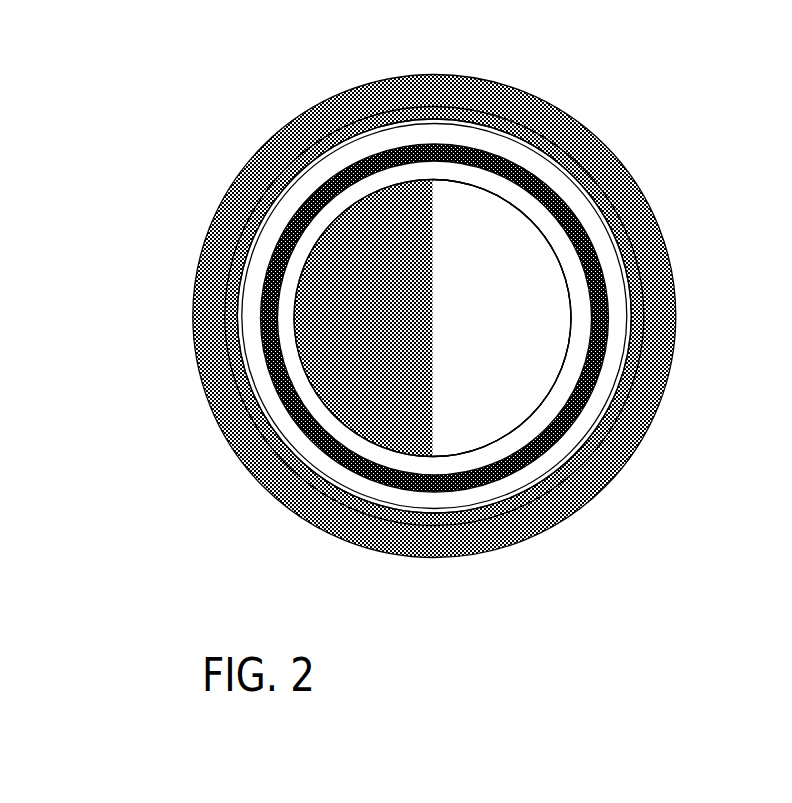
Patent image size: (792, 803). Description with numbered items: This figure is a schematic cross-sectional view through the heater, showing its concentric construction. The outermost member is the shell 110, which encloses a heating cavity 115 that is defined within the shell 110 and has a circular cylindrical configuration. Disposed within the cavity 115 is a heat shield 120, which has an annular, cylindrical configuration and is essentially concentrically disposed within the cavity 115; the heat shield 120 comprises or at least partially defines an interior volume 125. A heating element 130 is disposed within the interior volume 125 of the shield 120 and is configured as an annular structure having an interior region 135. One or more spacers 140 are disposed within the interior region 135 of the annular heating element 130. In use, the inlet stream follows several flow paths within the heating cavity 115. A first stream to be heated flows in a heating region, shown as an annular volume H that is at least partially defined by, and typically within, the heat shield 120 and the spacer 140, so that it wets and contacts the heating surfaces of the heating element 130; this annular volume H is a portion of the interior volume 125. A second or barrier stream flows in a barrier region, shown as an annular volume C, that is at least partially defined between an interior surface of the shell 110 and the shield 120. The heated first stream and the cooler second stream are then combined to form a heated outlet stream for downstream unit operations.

The shell 110 is at (603, 503).
The heating cavity 115 is at (642, 322).
The heat shield 120 is at (236, 317).
The interior volume 125 is at (273, 233).
The heating element 130 is at (435, 152).
The interior region 135 is at (328, 420).
The spacer 140 is at (429, 460).
The annular volume (heating region) H is at (290, 417).
The annular volume (barrier region) C is at (630, 420).